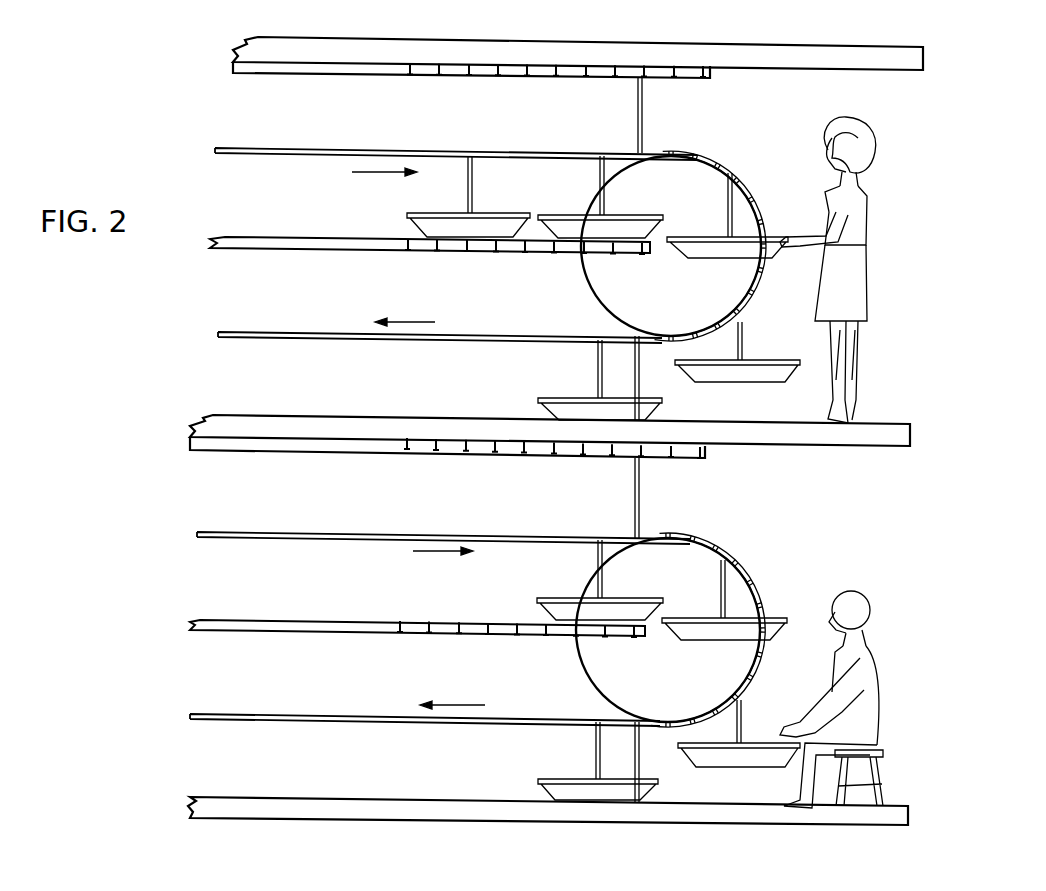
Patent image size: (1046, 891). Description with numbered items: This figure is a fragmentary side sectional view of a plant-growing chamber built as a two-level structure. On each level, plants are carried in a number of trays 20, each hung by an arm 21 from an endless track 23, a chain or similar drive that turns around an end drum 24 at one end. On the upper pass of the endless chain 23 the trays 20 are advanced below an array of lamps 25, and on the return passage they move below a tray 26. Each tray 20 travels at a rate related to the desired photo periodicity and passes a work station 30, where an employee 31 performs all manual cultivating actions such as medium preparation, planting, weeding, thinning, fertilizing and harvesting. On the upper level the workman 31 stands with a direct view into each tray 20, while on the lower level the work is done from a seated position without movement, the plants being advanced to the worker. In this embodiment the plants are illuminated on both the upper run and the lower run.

The tray 20 is at (427, 228).
The arm 21 is at (500, 187).
The endless track 23 is at (488, 152).
The end drum 24 is at (583, 277).
The array of lamps 25 is at (497, 79).
The tray 26 is at (468, 250).
The work station 30 is at (807, 117).
The employee 31 is at (840, 210).